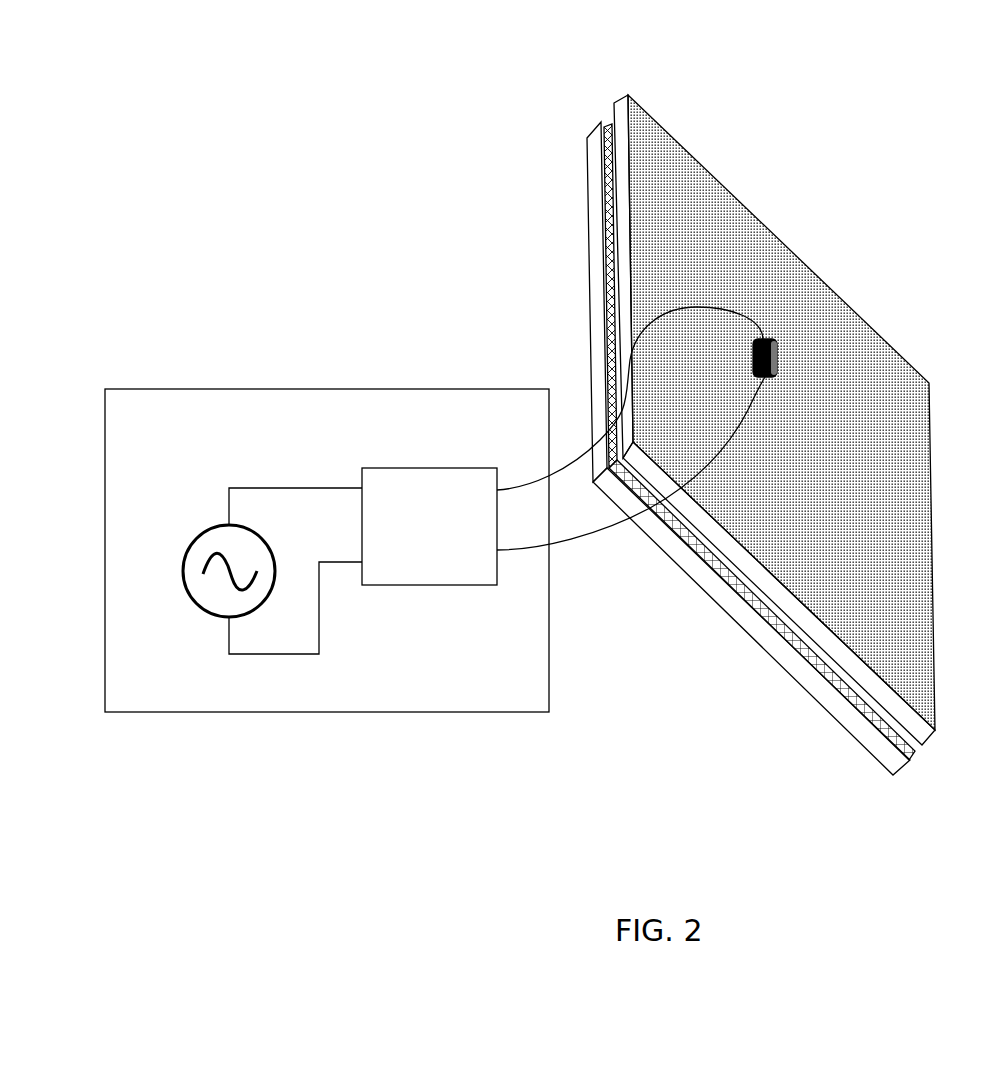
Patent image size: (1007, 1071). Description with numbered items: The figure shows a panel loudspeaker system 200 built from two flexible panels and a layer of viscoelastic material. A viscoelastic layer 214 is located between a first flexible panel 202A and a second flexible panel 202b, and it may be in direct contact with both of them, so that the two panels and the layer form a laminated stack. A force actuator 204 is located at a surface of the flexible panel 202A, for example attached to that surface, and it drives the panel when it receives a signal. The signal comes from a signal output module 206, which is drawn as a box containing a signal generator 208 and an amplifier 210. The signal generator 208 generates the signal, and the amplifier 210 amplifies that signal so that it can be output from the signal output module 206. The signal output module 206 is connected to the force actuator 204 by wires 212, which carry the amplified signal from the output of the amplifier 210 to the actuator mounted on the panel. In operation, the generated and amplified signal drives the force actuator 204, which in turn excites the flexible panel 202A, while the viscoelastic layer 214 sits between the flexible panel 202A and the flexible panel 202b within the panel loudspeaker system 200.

The panel loudspeaker system 200 is at (520, 448).
The flexible panel 202A is at (613, 96).
The flexible panel 202b is at (590, 167).
The force actuator 204 is at (786, 338).
The signal output module 206 is at (318, 395).
The signal generator 208 is at (185, 536).
The amplifier 210 is at (427, 575).
The wires 212 is at (582, 566).
The viscoelastic layer 214 is at (596, 228).